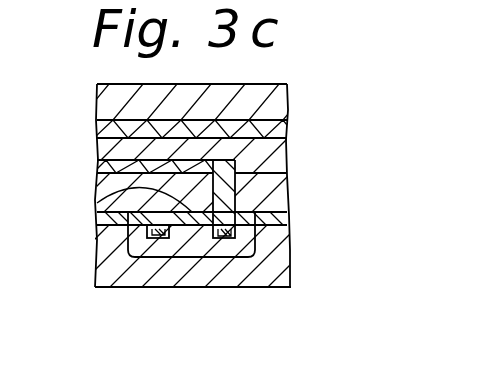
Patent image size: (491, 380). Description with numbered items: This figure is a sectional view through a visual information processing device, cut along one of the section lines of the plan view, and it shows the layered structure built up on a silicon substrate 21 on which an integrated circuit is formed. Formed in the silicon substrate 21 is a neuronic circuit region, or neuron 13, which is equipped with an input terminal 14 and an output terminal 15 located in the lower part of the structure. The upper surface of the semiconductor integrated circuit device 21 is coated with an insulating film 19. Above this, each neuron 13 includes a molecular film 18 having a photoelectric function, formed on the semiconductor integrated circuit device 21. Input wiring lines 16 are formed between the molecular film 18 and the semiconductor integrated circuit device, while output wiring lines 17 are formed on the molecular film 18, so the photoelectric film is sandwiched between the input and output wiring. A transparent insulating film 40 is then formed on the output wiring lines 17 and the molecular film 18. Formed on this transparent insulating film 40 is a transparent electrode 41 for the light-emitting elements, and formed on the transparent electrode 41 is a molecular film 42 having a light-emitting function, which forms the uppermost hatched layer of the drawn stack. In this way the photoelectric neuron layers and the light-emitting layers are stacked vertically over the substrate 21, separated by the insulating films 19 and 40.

The molecular film having a light-emitting function 42 is at (284, 93).
The transparent electrode 41 is at (286, 127).
The transparent insulating film 40 is at (287, 162).
The molecular film 18 is at (289, 195).
The insulating film 19 is at (107, 217).
The neuronic circuit region 13 is at (255, 245).
The silicon substrate 21 is at (283, 281).
The input terminal 14 is at (162, 238).
The output terminal 15 is at (230, 240).
The output wiring line 17 is at (97, 168).
The input wiring line 16 is at (101, 255).